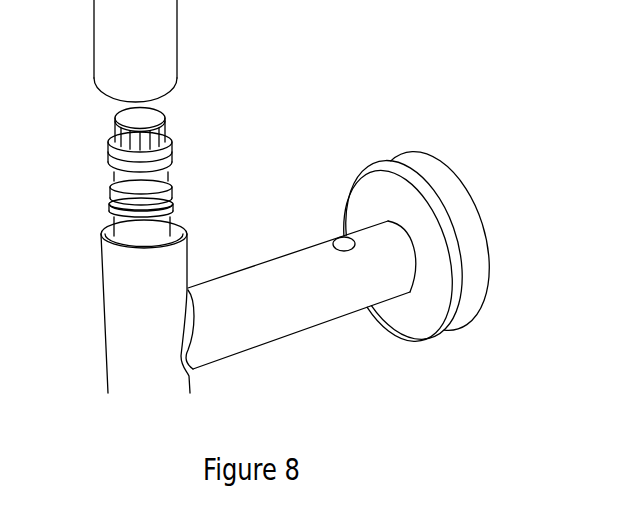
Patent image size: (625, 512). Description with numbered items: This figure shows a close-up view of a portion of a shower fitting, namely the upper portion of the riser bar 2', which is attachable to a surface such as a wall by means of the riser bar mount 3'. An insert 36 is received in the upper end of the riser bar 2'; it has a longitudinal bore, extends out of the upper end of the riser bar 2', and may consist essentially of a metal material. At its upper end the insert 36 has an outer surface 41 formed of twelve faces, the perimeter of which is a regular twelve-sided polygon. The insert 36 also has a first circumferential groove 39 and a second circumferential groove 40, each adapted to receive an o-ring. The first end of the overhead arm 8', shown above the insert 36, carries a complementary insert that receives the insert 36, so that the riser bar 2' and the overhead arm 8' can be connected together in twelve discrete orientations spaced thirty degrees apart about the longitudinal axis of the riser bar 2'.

The overhead arm 8' is at (159, 51).
The outer surface 41 is at (164, 126).
The first circumferential groove 39 is at (111, 160).
The insert 36 is at (163, 184).
The second circumferential groove 40 is at (112, 203).
The riser bar 2' is at (118, 306).
The riser bar mount 3' is at (337, 252).